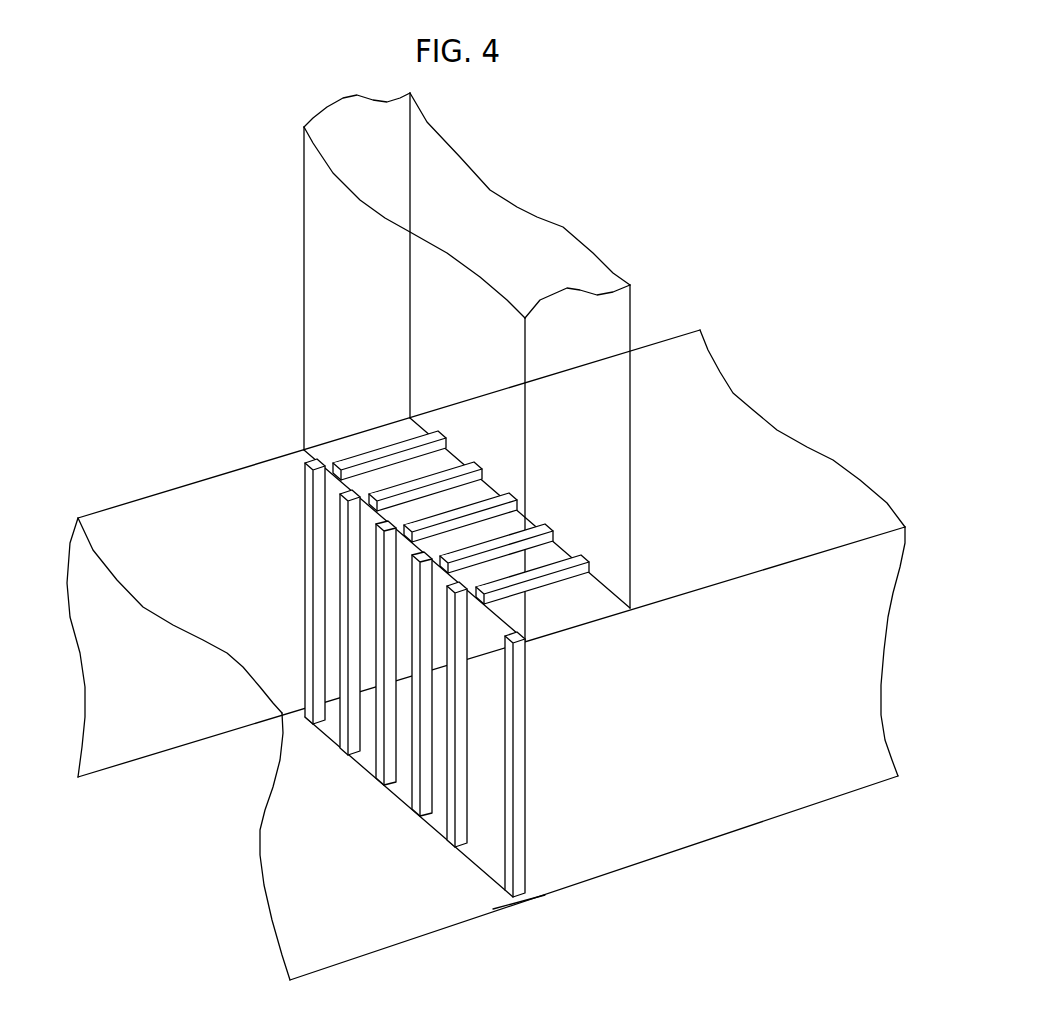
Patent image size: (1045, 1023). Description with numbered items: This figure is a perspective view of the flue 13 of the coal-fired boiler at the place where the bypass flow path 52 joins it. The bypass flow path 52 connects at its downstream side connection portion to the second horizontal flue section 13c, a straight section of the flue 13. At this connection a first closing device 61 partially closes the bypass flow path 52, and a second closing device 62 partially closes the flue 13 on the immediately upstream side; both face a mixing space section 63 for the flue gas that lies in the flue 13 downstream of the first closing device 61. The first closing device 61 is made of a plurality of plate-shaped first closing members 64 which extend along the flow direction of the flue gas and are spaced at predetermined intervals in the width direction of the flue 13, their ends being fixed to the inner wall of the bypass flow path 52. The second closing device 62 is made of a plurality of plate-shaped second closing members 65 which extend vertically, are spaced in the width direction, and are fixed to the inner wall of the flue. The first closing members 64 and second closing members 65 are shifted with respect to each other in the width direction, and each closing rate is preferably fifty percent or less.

The flue 13 is at (732, 377).
The second horizontal flue section 13c is at (750, 812).
The bypass flow path 52 is at (631, 308).
The first closing device 61 is at (540, 498).
The second closing device 62 is at (350, 793).
The mixing space section 63 is at (603, 750).
The first closing members 64 is at (431, 437).
The second closing members 65 is at (507, 758).